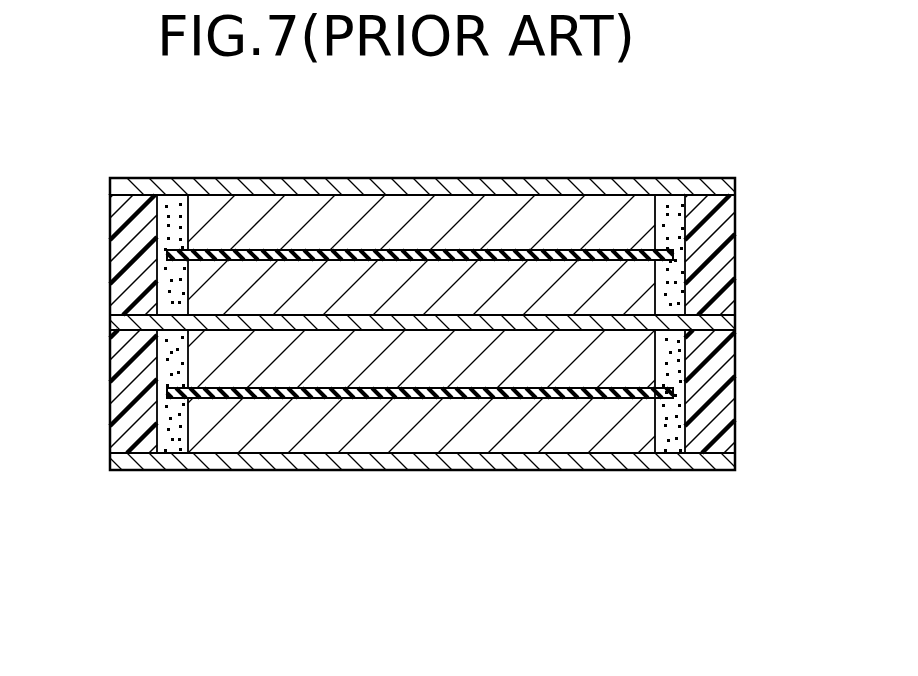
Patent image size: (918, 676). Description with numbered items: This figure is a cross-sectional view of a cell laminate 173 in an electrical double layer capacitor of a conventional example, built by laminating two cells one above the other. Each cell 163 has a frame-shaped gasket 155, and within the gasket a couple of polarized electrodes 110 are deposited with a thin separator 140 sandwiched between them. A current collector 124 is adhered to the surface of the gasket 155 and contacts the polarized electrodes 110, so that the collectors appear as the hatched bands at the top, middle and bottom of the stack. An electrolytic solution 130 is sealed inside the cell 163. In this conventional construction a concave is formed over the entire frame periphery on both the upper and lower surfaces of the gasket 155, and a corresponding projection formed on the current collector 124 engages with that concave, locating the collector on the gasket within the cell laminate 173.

The polarized electrode 110 is at (473, 443).
The current collector 124 is at (340, 458).
The electrolytic solution 130 is at (667, 448).
The separator 140 is at (673, 255).
The gasket 155 is at (733, 390).
The cell 163 is at (88, 323).
The cell laminate 173 is at (676, 142).